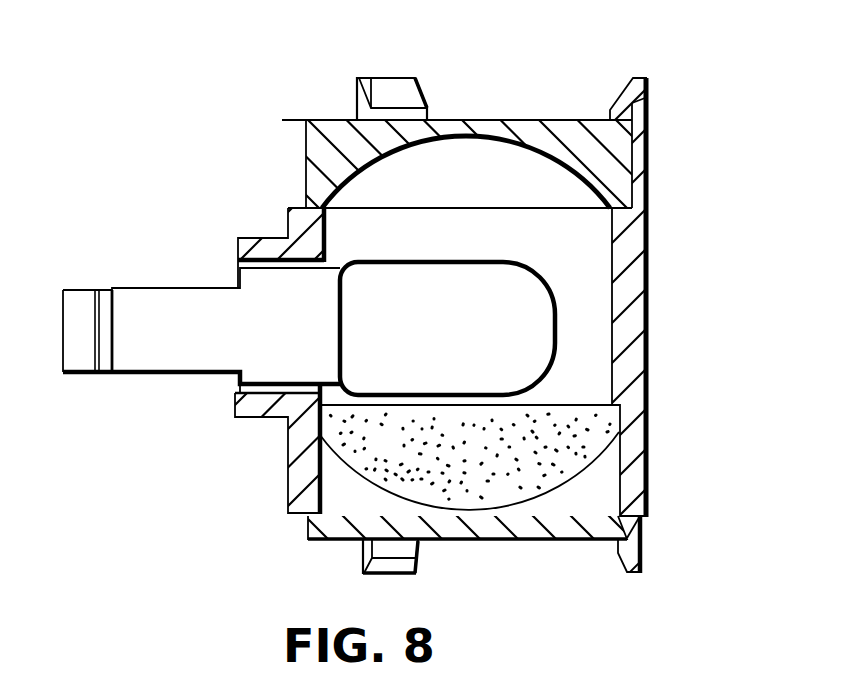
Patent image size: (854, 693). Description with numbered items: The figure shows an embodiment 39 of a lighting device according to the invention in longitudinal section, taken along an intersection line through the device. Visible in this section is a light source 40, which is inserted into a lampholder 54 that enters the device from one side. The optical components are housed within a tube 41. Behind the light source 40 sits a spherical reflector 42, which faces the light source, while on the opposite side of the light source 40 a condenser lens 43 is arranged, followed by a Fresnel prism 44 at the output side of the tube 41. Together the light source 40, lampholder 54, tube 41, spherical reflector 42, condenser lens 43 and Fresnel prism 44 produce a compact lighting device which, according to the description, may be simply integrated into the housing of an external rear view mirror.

The embodiment of a lighting device 39 is at (700, 78).
The light source 40 is at (520, 365).
The tube 41 is at (635, 460).
The spherical reflector 42 is at (563, 132).
The condenser lens 43 is at (562, 453).
The Fresnel prism 44 is at (567, 533).
The lampholder 54 is at (220, 358).